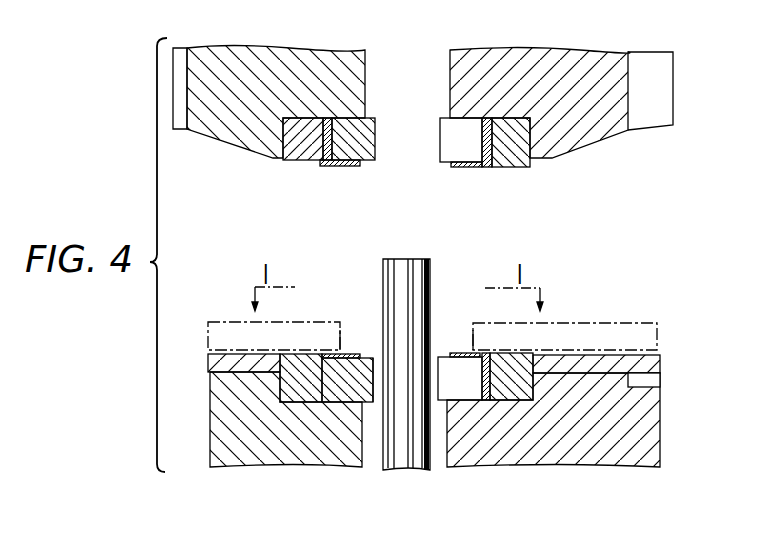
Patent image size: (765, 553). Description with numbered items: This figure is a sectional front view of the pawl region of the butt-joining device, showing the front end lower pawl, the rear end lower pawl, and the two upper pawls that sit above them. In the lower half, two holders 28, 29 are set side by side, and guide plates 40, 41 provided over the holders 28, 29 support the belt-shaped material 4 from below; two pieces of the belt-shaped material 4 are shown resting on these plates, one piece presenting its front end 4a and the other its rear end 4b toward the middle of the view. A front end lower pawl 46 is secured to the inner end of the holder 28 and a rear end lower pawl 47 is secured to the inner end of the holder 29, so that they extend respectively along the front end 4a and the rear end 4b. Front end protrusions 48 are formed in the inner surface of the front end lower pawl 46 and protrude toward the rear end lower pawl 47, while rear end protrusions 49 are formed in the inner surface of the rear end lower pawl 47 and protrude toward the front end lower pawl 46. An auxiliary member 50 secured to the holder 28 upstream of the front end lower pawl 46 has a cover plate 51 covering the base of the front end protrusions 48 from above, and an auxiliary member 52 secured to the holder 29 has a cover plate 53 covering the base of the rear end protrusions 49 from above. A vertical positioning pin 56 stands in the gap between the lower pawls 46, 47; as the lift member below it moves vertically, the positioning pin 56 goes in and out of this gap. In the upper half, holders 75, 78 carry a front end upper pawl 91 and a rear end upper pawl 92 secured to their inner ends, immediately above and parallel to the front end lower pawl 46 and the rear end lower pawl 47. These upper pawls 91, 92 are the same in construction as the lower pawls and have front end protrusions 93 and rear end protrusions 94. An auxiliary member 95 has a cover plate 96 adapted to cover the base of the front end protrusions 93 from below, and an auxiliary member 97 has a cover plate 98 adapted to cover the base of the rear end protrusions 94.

The belt-shaped material 4 is at (231, 321).
The front end 4a is at (473, 352).
The rear end 4b is at (340, 348).
The holder 28 is at (611, 462).
The holder 29 is at (244, 466).
The guide plate 40 is at (657, 364).
The guide plate 41 is at (211, 362).
The front end lower pawl 46 is at (484, 401).
The rear end lower pawl 47 is at (330, 402).
The front end protrusions 48 is at (443, 355).
The rear end protrusions 49 is at (372, 356).
The auxiliary member 50 is at (493, 401).
The cover plate 51 is at (466, 353).
The auxiliary member 52 is at (300, 402).
The cover plate 53 is at (352, 354).
The positioning pin 56 is at (405, 266).
The holder 75 is at (583, 140).
The holder 78 is at (219, 138).
The front end upper pawl 91 is at (486, 167).
The rear end upper pawl 92 is at (328, 160).
The front end protrusions 93 is at (443, 140).
The rear end protrusions 94 is at (375, 128).
The auxiliary member 95 is at (512, 167).
The cover plate 96 is at (467, 168).
The auxiliary member 97 is at (299, 164).
The cover plate 98 is at (353, 168).